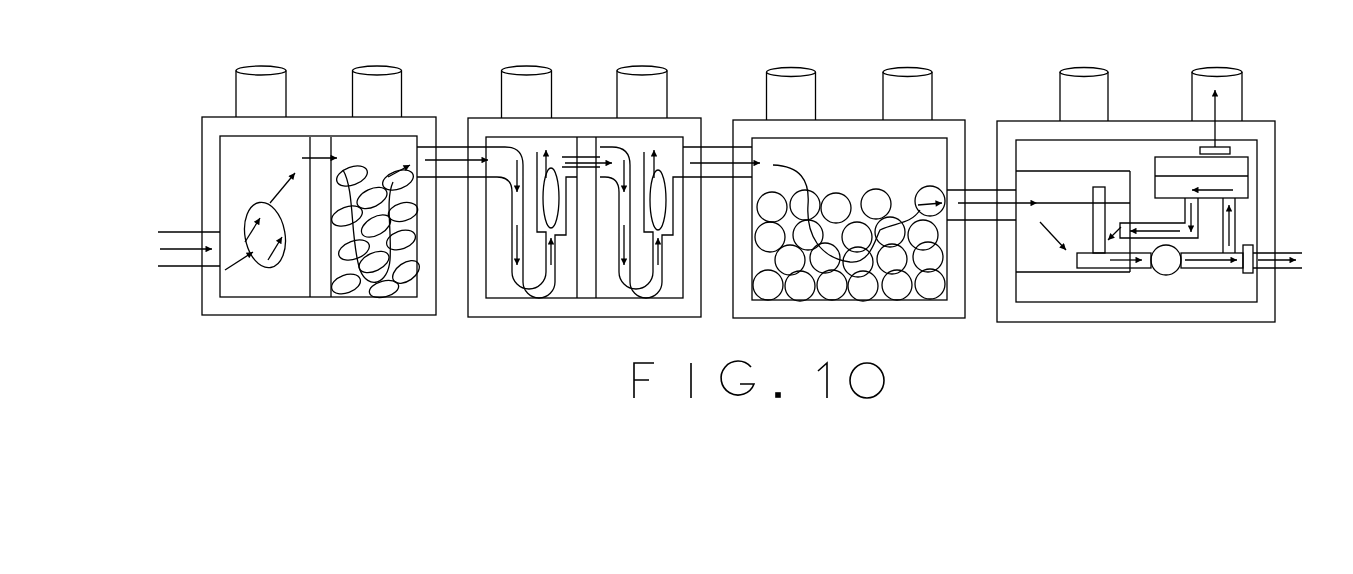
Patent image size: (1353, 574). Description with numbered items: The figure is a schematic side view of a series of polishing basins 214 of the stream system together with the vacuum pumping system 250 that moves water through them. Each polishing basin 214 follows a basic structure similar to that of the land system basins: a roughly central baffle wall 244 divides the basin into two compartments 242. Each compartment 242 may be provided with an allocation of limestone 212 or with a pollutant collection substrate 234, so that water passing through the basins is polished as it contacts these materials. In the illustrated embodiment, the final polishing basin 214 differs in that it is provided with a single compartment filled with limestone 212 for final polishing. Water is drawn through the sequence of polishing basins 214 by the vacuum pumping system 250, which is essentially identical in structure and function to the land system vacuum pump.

The limestone 212 is at (397, 290).
The polishing basin 214 is at (419, 117).
The pollutant collection substrate 234 is at (260, 203).
The compartment 242 is at (352, 150).
The baffle wall 244 is at (325, 290).
The vacuum pumping system 250 is at (1258, 122).